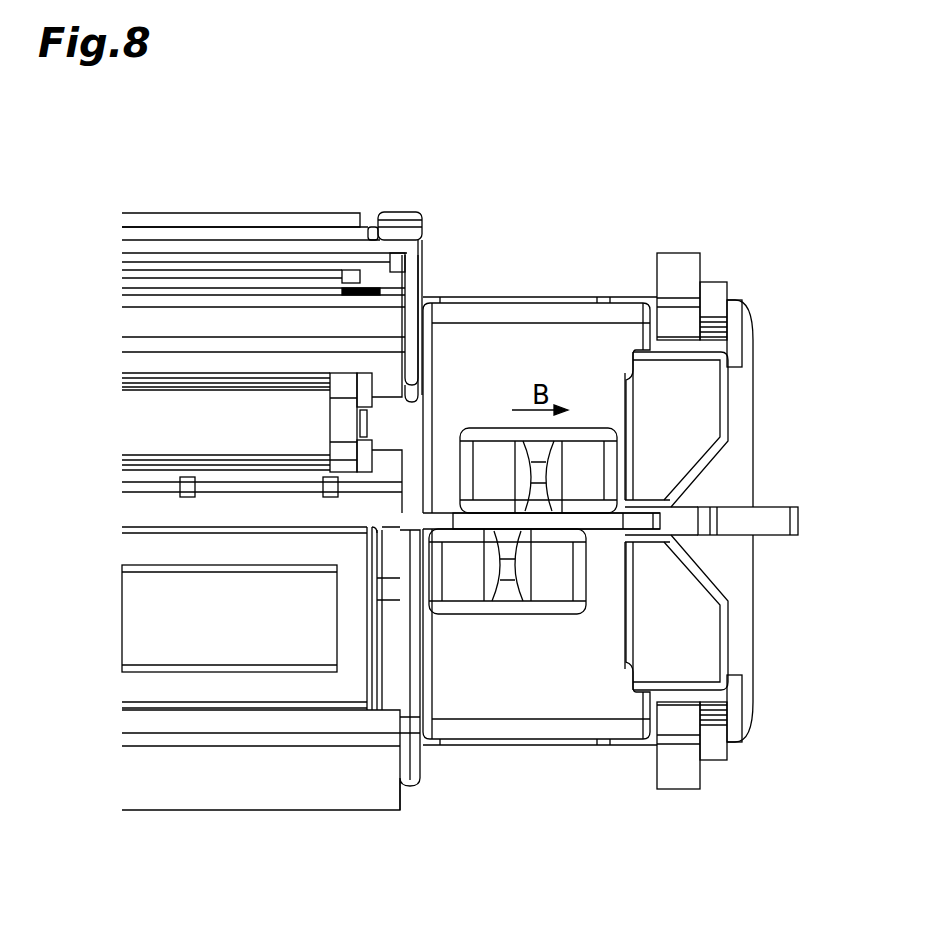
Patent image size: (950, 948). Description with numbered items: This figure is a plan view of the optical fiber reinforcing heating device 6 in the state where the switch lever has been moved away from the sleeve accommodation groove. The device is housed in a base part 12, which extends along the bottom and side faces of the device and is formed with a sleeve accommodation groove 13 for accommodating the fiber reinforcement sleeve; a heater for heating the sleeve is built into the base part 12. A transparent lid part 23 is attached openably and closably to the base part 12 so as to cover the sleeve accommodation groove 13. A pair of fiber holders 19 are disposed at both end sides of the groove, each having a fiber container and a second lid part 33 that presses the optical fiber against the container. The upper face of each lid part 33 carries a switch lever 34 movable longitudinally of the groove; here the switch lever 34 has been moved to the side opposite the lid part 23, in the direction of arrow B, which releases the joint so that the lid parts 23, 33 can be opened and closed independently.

The optical fiber reinforcing heating device 6 is at (288, 204).
The base part 12 is at (236, 778).
The sleeve accommodation groove 13 is at (157, 415).
The lid part 23 is at (236, 212).
The fiber holder 19 is at (596, 289).
The lid part 33 is at (556, 338).
The switch lever 34 is at (498, 448).